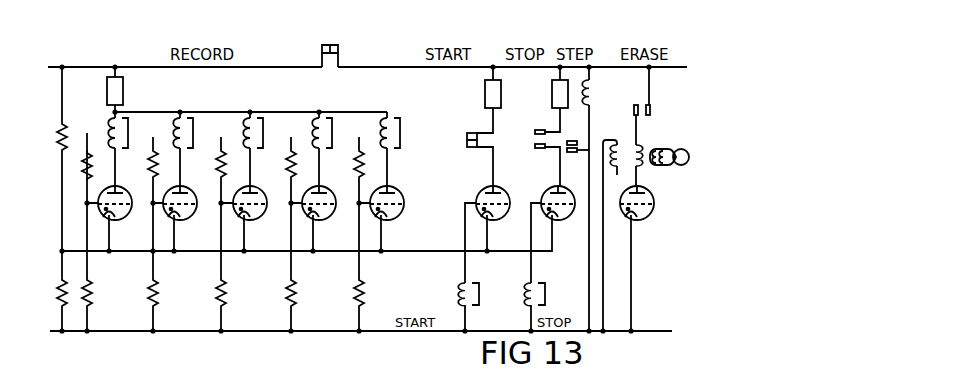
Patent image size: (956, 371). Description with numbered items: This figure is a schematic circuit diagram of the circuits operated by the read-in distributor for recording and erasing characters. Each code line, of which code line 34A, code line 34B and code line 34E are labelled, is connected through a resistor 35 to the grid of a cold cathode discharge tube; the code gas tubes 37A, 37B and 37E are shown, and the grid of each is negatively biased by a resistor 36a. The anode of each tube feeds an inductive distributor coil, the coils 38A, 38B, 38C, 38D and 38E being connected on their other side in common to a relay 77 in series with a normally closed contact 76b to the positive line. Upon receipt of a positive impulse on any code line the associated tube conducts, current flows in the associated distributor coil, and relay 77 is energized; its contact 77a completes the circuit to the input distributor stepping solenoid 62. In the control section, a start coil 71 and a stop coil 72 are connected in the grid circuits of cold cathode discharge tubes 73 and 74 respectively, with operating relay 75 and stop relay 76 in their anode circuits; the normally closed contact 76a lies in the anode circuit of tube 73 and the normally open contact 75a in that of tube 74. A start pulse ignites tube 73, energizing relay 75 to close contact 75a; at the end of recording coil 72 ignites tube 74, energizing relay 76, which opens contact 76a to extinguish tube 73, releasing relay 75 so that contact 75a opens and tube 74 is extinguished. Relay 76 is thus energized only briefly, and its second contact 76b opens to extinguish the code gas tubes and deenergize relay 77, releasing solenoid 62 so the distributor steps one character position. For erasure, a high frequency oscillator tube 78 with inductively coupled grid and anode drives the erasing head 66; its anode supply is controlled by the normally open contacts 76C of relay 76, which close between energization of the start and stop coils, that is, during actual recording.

The relay 77 is at (107, 93).
The normally closed contact 76b is at (322, 56).
The inductive distributor coil 38A is at (117, 120).
The inductive distributor coil 38B is at (181, 118).
The inductive distributor coil 38C is at (251, 118).
The inductive distributor coil 38D is at (320, 118).
The inductive distributor coil 38E is at (388, 118).
The code line 34A is at (88, 150).
The code line 34B is at (153, 150).
The code line 34E is at (359, 150).
The resistor 35 is at (86, 172).
The resistor 36a is at (90, 296).
The cold cathode discharge tube 37A is at (131, 183).
The cold cathode discharge tube 37B is at (191, 191).
The cold cathode discharge tube 37E is at (400, 184).
The operating relay 75 is at (485, 97).
The stop relay 76 is at (552, 97).
The normally closed contact 76a is at (467, 143).
The normally open contact 75a is at (535, 143).
The input distributor stepping solenoid 62 is at (592, 97).
The contact 77a is at (580, 147).
The contacts 76C is at (650, 115).
The erasing head 66 is at (678, 150).
The cold cathode discharge tube 73 is at (505, 219).
The cold cathode discharge tube 74 is at (570, 219).
The high frequency oscillator tube 78 is at (647, 219).
The start coil 71 is at (459, 293).
The stop coil 72 is at (526, 293).